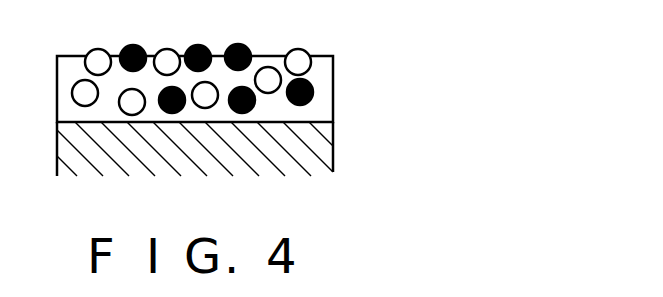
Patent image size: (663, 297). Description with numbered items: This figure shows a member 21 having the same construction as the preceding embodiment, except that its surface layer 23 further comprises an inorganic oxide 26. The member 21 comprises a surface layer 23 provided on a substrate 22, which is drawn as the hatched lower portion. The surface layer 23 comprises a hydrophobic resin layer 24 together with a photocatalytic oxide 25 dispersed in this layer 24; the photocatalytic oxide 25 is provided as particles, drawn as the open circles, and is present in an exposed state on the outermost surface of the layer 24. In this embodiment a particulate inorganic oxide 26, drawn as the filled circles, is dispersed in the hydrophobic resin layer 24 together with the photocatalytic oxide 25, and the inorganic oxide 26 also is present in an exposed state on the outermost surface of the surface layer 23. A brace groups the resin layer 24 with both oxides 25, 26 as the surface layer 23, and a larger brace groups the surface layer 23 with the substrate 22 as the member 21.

The member 21 is at (512, 43).
The substrate 22 is at (247, 158).
The surface layer 23 is at (447, 12).
The hydrophobic resin layer 24 is at (247, 95).
The photocatalytic oxide 25 is at (298, 50).
The inorganic oxide 26 is at (313, 88).